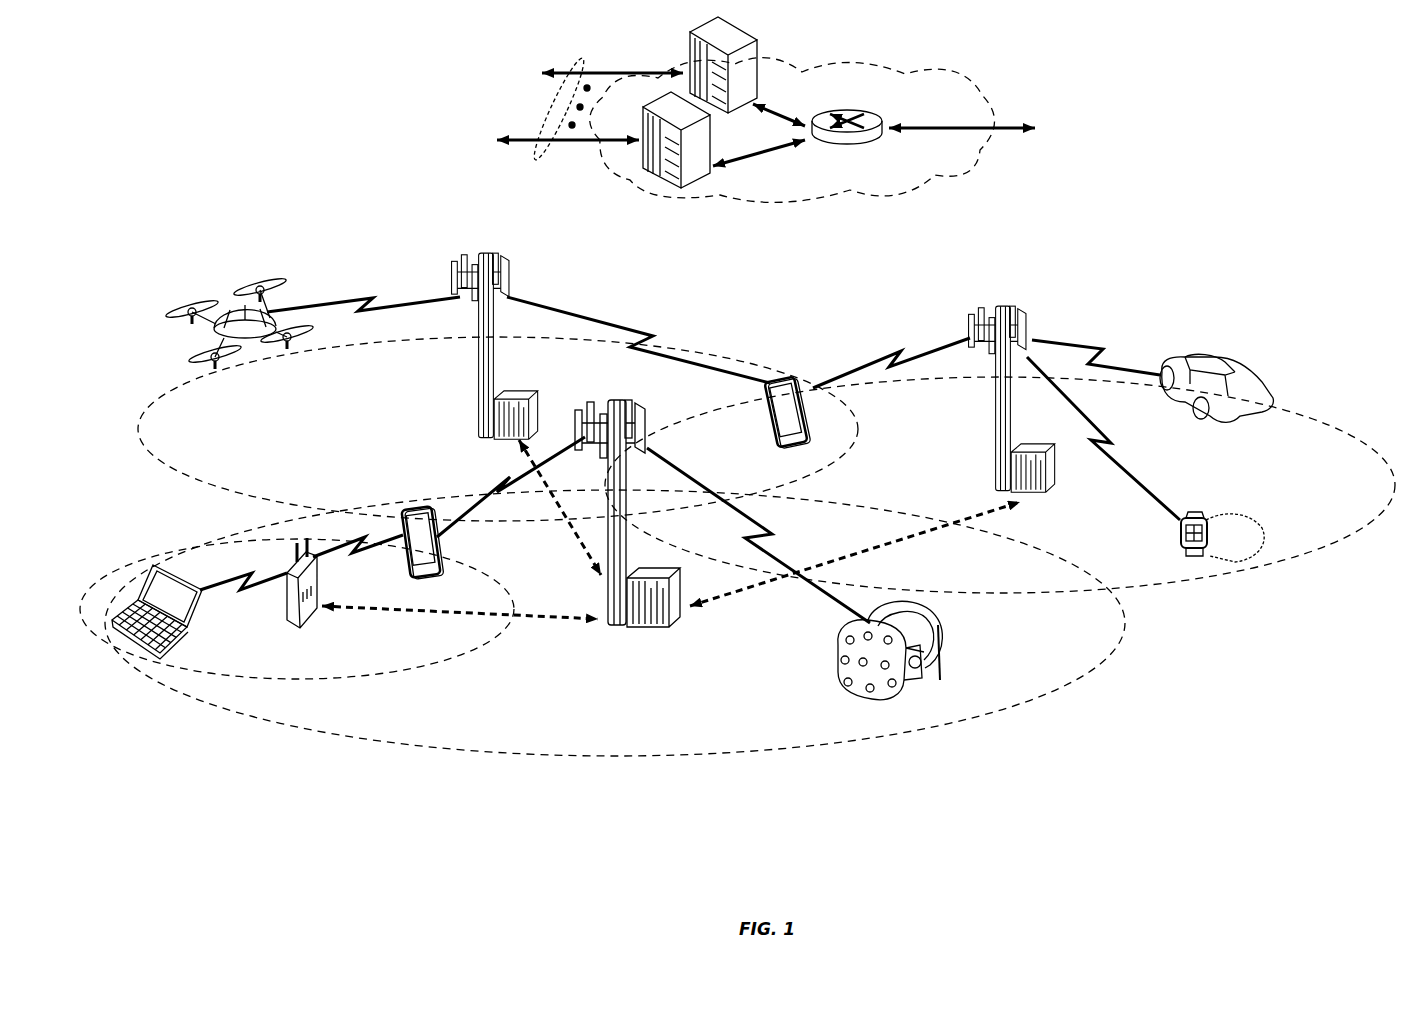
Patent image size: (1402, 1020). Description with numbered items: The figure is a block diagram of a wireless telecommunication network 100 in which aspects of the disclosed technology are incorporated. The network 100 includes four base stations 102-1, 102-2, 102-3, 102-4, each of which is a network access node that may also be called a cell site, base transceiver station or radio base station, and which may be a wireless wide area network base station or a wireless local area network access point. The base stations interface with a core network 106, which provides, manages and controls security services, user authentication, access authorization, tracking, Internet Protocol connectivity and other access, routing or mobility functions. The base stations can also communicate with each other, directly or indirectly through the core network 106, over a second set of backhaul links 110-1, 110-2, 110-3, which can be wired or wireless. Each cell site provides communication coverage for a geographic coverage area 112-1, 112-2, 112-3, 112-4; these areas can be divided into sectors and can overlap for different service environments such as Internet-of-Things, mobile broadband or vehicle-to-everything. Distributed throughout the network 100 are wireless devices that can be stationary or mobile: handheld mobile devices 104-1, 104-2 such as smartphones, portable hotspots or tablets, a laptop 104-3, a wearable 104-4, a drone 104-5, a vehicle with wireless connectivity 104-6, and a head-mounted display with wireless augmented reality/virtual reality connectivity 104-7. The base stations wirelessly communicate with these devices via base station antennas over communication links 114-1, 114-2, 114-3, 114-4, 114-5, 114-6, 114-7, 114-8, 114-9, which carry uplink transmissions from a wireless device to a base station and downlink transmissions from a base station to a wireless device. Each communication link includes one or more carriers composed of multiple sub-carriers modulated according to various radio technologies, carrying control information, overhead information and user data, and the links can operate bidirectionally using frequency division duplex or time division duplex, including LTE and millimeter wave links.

The wireless telecommunication network 100 is at (1290, 116).
The base station 102-1 is at (613, 628).
The base station 102-2 is at (478, 383).
The base station 102-3 is at (997, 412).
The base station 102-4 is at (288, 614).
The handheld mobile device 104-1 is at (437, 552).
The handheld mobile device 104-2 is at (770, 413).
The laptop 104-3 is at (137, 655).
The wearable 104-4 is at (1200, 518).
The drone 104-5 is at (248, 347).
The vehicle with wireless connectivity 104-6 is at (1237, 365).
The head-mounted display 104-7 is at (947, 640).
The core network 106 is at (877, 193).
The backhaul link 110-1 is at (357, 613).
The backhaul link 110-2 is at (917, 533).
The backhaul link 110-3 is at (577, 538).
The geographic coverage area 112-1 is at (543, 757).
The geographic coverage area 112-2 is at (420, 668).
The geographic coverage area 112-3 is at (197, 484).
The geographic coverage area 112-4 is at (1277, 410).
The communication link 114-1 is at (773, 538).
The communication link 114-2 is at (500, 478).
The communication link 114-3 is at (233, 585).
The communication link 114-4 is at (357, 555).
The communication link 114-5 is at (366, 300).
The communication link 114-6 is at (643, 340).
The communication link 114-7 is at (893, 358).
The communication link 114-8 is at (1120, 452).
The communication link 114-9 is at (1093, 340).